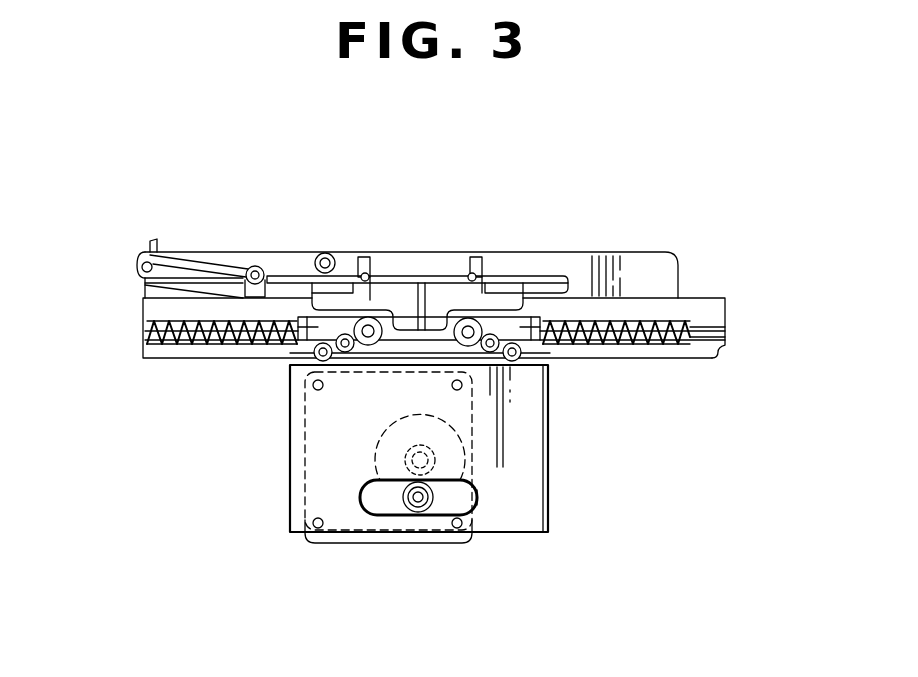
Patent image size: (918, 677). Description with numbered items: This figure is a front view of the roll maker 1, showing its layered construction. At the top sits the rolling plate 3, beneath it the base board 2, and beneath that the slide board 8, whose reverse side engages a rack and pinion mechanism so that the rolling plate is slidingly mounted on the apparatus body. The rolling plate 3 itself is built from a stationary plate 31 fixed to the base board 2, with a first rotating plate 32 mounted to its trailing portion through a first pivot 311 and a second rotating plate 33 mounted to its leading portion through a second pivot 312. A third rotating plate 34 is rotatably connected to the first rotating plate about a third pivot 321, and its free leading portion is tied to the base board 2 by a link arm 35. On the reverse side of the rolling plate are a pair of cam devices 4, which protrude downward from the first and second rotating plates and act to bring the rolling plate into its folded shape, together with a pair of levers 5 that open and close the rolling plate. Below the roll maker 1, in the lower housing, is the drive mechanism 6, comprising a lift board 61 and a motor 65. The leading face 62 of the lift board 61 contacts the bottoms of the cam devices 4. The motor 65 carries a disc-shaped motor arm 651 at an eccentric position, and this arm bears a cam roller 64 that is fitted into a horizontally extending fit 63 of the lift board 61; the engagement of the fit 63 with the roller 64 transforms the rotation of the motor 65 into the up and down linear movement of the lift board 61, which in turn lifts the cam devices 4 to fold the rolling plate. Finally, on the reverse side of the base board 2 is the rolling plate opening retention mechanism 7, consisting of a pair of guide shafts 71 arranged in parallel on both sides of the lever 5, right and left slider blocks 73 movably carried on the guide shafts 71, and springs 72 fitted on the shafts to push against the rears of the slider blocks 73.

The roll maker 1 is at (665, 227).
The base board 2 is at (680, 272).
The rolling plate 3 is at (455, 206).
The stationary plate 31 is at (424, 275).
The first pivot 311 is at (380, 275).
The second pivot 312 is at (460, 265).
The first rotating plate 32 is at (290, 251).
The third pivot 321 is at (258, 251).
The second rotating plate 33 is at (573, 251).
The third rotating plate 34 is at (203, 250).
The link arm 35 is at (224, 251).
The cam devices 4 is at (253, 362).
The levers 5 is at (543, 251).
The drive mechanism 6 is at (570, 550).
The lift board 61 is at (552, 490).
The leading face 62 is at (528, 368).
The fit 63 is at (377, 515).
The cam roller 64 is at (422, 510).
The motor 65 is at (325, 545).
The motor arm 651 is at (478, 500).
The rolling plate opening retention mechanism 7 is at (128, 311).
The guide shafts 71 is at (728, 328).
The springs 72 is at (660, 342).
The slider blocks 73 is at (550, 345).
The slide board 8 is at (712, 307).